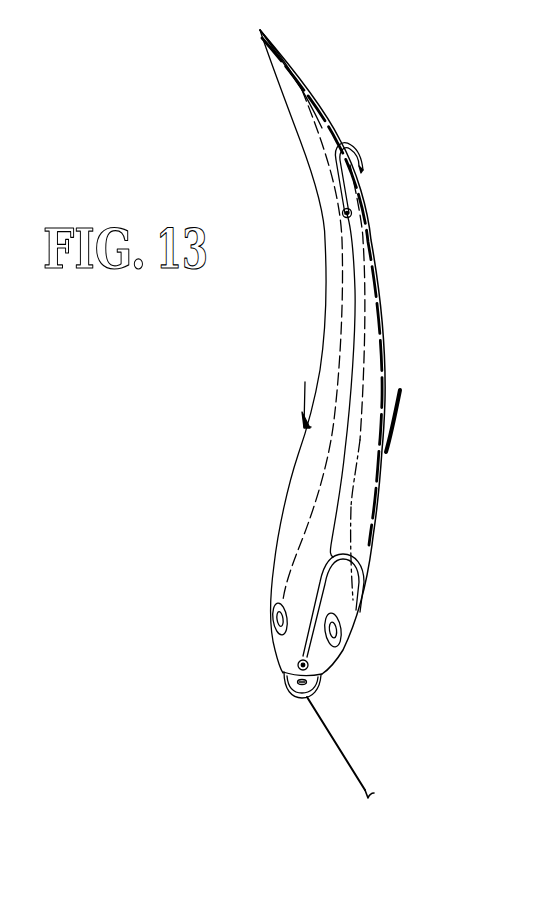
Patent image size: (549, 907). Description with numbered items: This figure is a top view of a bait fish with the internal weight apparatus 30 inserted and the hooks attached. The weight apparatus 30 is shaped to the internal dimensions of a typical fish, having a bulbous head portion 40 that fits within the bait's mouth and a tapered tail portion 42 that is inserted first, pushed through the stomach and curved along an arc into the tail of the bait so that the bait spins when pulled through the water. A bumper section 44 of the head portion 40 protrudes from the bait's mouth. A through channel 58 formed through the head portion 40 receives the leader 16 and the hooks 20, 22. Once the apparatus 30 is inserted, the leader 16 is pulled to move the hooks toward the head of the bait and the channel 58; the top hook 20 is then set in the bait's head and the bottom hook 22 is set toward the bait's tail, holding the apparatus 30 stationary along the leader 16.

The leader section 16 is at (360, 778).
The top hook 20 is at (356, 573).
The bottom hook 22 is at (364, 158).
The internal weight apparatus 30 is at (352, 505).
The bulbous head portion 40 is at (361, 604).
The tapered tail portion 42 is at (343, 298).
The bumper section 44 is at (291, 694).
The through channel 58 is at (306, 682).